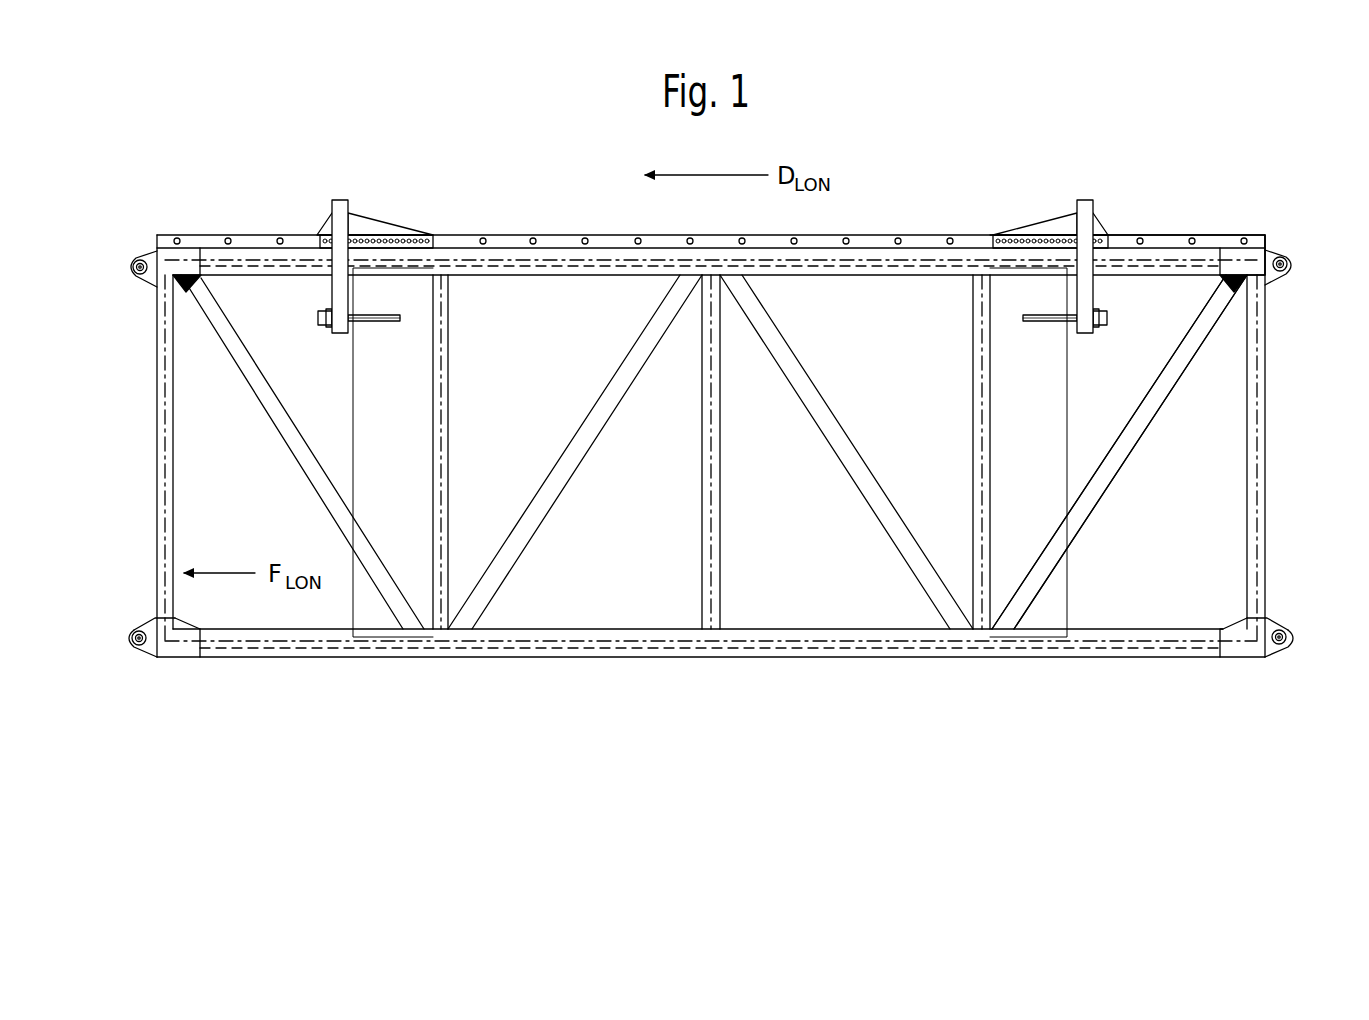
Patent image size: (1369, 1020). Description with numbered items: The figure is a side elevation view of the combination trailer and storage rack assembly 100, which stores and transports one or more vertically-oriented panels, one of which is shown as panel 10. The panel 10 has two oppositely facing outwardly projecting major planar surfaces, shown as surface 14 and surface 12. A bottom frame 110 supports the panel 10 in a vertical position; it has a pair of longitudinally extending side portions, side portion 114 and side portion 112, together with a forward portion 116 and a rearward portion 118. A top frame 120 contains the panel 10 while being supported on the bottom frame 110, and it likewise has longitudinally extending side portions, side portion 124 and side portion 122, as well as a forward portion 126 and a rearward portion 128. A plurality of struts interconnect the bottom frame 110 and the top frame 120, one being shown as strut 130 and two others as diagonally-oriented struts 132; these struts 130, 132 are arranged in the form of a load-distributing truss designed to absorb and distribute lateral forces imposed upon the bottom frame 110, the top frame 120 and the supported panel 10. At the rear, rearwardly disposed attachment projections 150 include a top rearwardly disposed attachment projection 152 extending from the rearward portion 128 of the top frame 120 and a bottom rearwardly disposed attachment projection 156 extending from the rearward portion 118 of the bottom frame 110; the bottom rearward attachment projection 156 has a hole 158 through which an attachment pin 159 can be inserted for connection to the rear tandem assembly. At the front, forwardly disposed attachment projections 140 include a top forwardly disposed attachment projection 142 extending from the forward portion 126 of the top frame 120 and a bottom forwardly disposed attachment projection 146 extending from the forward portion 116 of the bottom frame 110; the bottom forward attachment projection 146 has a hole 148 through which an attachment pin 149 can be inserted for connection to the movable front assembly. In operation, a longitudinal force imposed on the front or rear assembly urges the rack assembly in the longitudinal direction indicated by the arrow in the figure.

The panel 10 is at (905, 290).
The surface 12 is at (1045, 612).
The surface 14 is at (1072, 588).
The combination trailer and storage rack assembly 100 is at (236, 198).
The bottom frame 110 is at (595, 637).
The side portion 112 is at (307, 632).
The side portion 114 is at (320, 657).
The forward portion 116 is at (186, 693).
The rearward portion 118 is at (1224, 680).
The top frame 120 is at (442, 258).
The side portion 122 is at (658, 248).
The side portion 124 is at (593, 235).
The forward portion 126 is at (202, 218).
The rearward portion 128 is at (1247, 219).
The strut 130 is at (705, 580).
The diagonally-oriented struts 132 is at (478, 603).
The forwardly disposed attachment projections 140 is at (147, 296).
The top forwardly disposed attachment projection 142 is at (147, 275).
The bottom forwardly disposed attachment projection 146 is at (147, 628).
The hole 148 is at (142, 651).
The attachment pin 149 is at (130, 643).
The rearwardly disposed attachment projections 150 is at (1274, 298).
The top rearwardly disposed attachment projection 152 is at (1268, 273).
The bottom rearwardly disposed attachment projection 156 is at (1270, 627).
The hole 158 is at (1272, 660).
The attachment pin 159 is at (1283, 627).